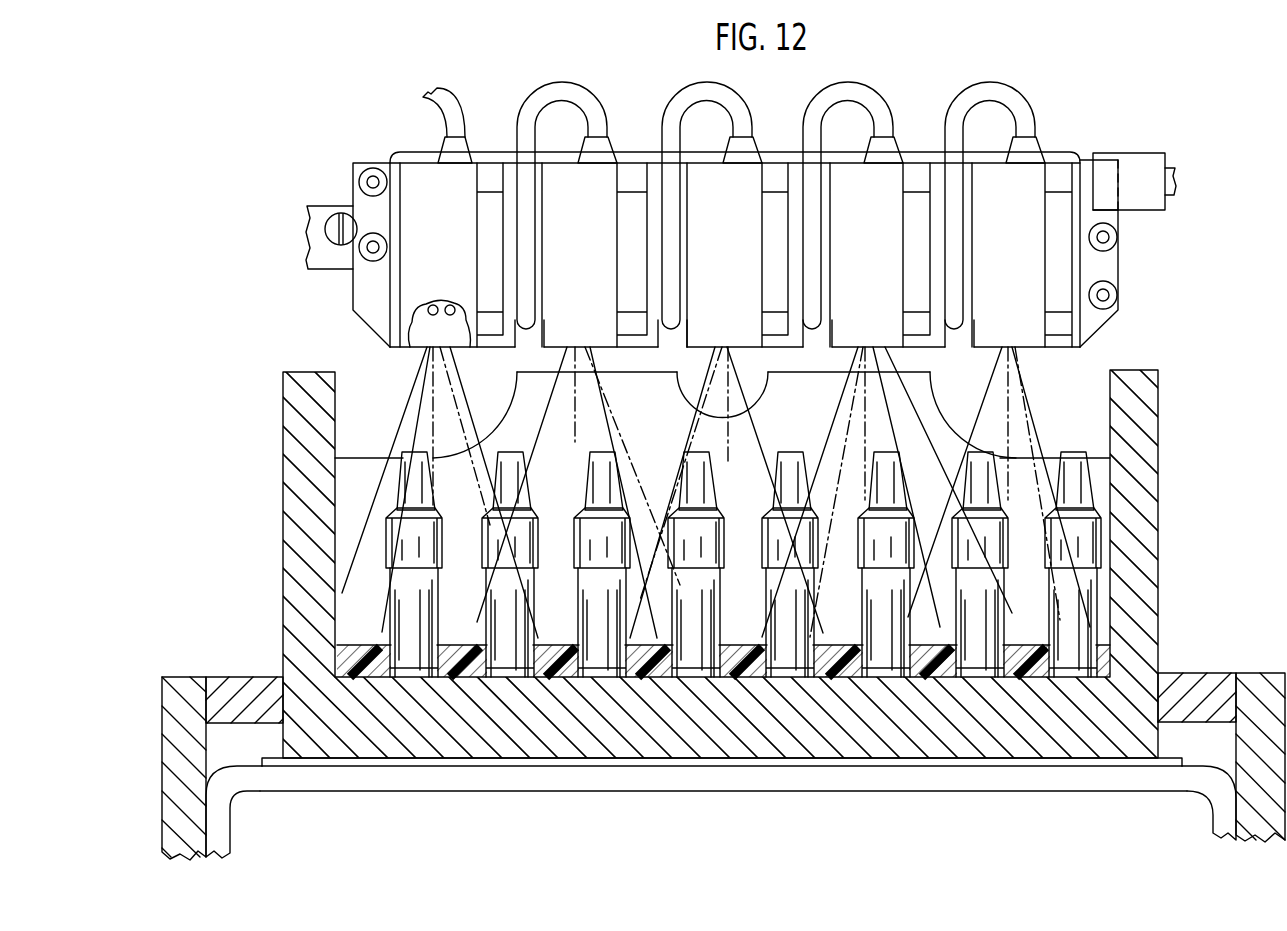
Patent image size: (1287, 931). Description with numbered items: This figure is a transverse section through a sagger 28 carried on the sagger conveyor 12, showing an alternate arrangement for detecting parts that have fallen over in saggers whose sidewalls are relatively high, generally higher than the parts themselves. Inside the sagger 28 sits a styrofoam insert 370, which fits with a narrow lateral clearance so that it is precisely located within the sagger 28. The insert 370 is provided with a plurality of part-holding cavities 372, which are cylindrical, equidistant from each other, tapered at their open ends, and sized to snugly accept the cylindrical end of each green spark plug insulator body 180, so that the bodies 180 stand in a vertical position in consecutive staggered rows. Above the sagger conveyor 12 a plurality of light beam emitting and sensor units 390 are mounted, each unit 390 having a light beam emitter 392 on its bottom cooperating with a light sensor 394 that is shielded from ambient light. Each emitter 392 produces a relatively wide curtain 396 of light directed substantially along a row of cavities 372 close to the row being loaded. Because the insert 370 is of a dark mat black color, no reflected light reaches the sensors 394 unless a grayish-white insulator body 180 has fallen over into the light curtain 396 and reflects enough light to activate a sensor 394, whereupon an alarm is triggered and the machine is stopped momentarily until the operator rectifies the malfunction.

The sagger conveyor 12 is at (1152, 793).
The sagger 28 is at (1158, 655).
The spark plug insulator body 180 is at (597, 463).
The styrofoam insert 370 is at (463, 676).
The part-holding cavity 372 is at (598, 675).
The light beam emitting and sensor unit 390 is at (560, 185).
The light beam emitter 392 is at (420, 363).
The light sensor 394 is at (465, 352).
The curtain of light 396 is at (413, 420).